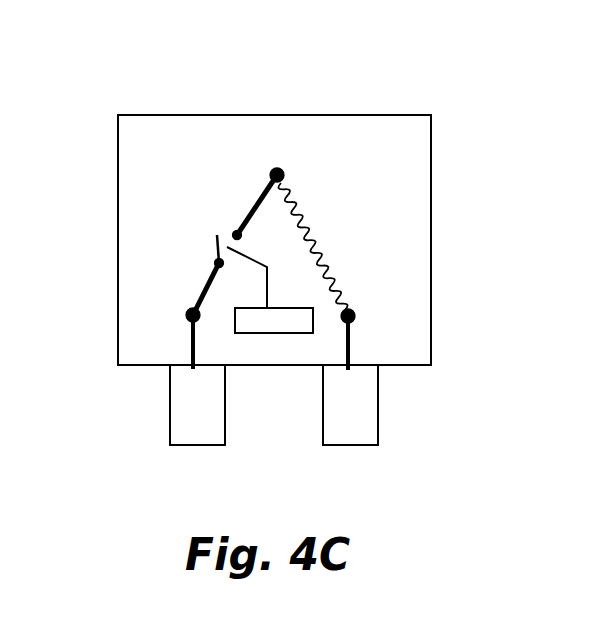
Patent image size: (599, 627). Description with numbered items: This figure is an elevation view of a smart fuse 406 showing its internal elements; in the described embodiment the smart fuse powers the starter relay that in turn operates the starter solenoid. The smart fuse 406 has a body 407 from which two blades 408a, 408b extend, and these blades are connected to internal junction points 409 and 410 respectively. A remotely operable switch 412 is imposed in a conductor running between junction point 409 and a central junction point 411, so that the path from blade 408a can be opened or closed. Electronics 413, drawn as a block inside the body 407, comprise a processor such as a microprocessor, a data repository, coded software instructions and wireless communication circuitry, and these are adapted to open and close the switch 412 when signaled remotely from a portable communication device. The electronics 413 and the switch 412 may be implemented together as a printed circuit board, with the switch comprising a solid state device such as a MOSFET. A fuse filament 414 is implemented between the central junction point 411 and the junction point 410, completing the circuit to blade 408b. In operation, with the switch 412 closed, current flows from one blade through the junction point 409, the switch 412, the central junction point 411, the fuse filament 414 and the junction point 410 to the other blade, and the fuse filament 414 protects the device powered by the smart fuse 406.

The smart fuse 406 is at (349, 108).
The body 407 is at (166, 115).
The blade 408a is at (188, 400).
The blade 408b is at (345, 402).
The junction point 409 is at (190, 316).
The junction point 410 is at (350, 316).
The central junction point 411 is at (277, 175).
The remotely operable switch 412 is at (207, 247).
The electronics 413 is at (273, 335).
The fuse filament 414 is at (317, 218).